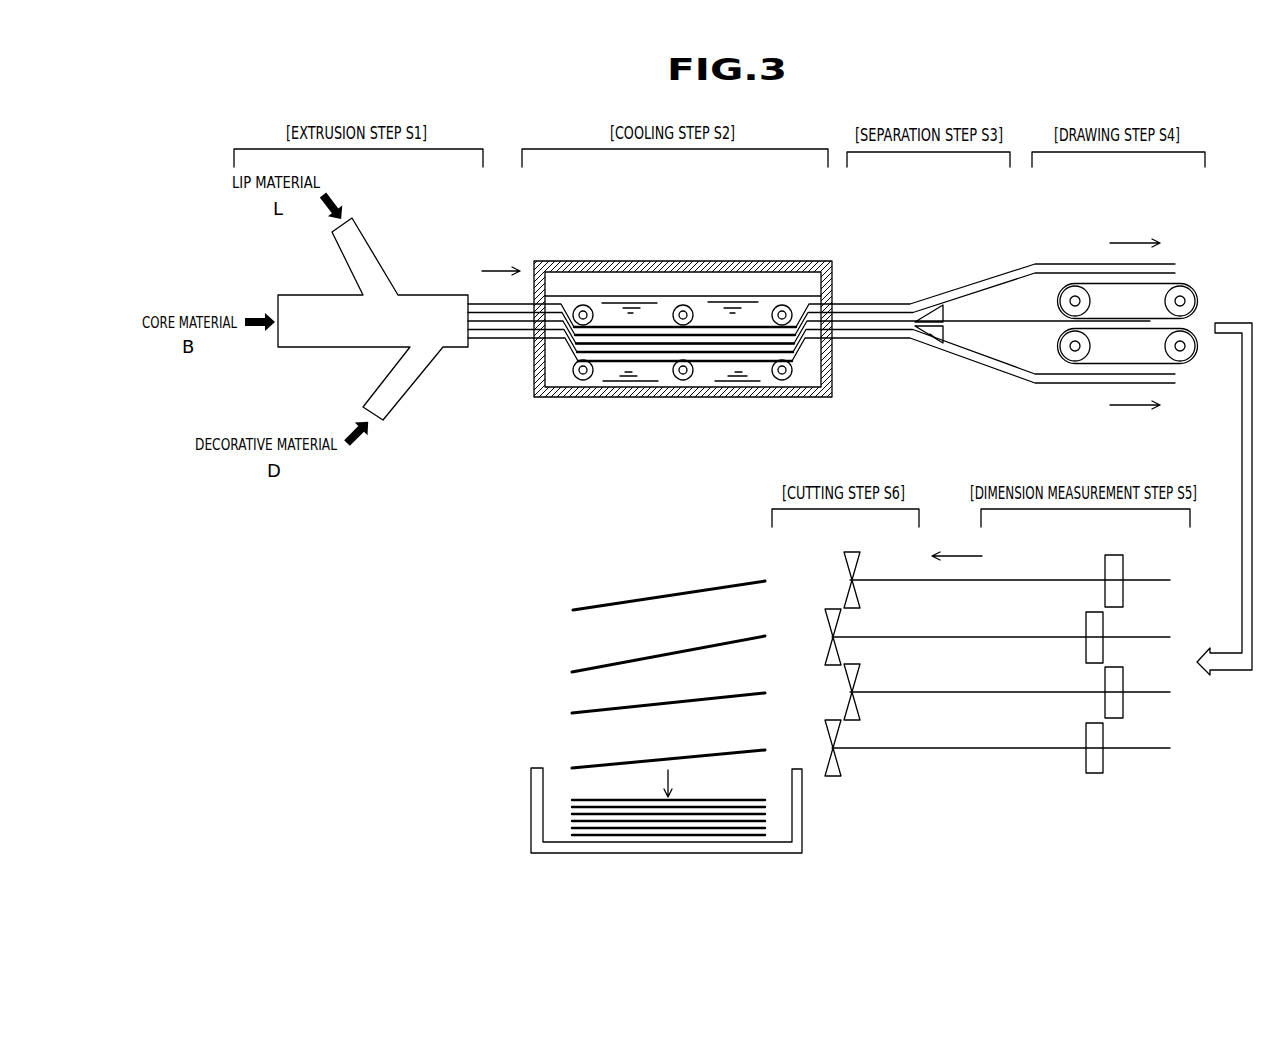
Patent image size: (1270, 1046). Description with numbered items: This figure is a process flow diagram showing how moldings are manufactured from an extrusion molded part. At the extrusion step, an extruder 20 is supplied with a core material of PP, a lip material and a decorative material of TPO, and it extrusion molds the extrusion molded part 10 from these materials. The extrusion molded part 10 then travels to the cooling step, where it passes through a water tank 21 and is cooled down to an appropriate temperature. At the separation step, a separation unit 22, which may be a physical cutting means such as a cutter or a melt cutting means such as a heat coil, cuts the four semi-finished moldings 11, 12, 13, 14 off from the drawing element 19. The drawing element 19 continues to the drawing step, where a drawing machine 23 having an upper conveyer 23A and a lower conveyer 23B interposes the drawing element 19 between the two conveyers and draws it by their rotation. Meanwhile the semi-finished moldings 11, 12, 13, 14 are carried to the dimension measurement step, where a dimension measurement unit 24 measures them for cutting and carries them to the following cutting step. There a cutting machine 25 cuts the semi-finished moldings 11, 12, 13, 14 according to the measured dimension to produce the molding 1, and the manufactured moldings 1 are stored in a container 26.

The molding 1 is at (602, 605).
The extrusion molded part 10 is at (507, 347).
The semi-finished molding 11 is at (847, 304).
The semi-finished molding 12 is at (888, 312).
The semi-finished molding 13 is at (847, 338).
The semi-finished molding 14 is at (888, 330).
The drawing element 19 is at (980, 321).
The extruder 20 is at (335, 335).
The water tank 21 is at (690, 260).
The separation unit 22 is at (944, 323).
The drawing machine 23 is at (1084, 275).
The upper conveyer 23A is at (1075, 301).
The lower conveyer 23B is at (1072, 343).
The dimension measurement unit 24 is at (1093, 772).
The cutting machine 25 is at (832, 777).
The container 26 is at (533, 813).